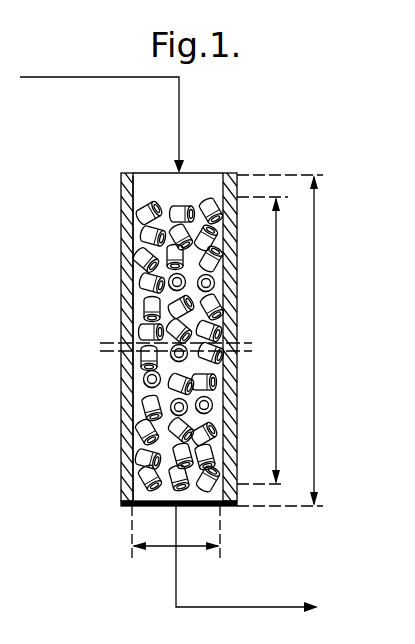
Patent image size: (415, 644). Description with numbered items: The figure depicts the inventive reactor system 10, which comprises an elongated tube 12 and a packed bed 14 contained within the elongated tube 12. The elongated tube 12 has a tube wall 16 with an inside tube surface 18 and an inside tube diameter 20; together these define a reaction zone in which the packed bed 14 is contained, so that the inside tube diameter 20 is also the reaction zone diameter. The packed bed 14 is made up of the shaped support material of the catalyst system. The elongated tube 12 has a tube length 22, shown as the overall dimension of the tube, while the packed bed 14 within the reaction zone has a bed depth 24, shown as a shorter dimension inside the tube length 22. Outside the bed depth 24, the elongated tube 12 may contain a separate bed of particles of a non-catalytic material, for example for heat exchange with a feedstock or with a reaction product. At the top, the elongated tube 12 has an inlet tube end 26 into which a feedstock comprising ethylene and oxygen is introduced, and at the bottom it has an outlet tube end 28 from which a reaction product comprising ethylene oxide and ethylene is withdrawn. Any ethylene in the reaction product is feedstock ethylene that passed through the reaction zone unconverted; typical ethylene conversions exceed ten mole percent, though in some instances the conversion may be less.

The reactor system 10 is at (316, 140).
The elongated tube 12 is at (121, 393).
The packed bed 14 is at (140, 286).
The tube wall 16 is at (232, 172).
The inside tube surface 18 is at (139, 186).
The inside tube diameter 20 is at (157, 548).
The tube length 22 is at (314, 252).
The bed depth 24 is at (277, 376).
The inlet tube end 26 is at (152, 171).
The outlet tube end 28 is at (136, 507).